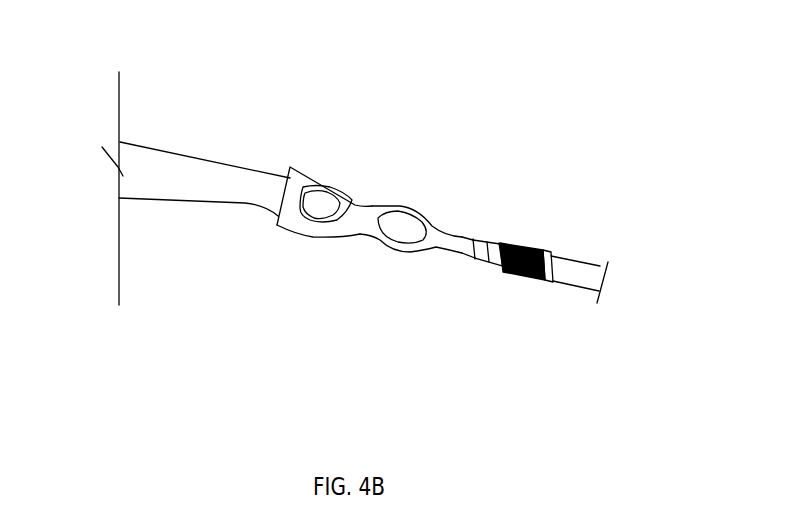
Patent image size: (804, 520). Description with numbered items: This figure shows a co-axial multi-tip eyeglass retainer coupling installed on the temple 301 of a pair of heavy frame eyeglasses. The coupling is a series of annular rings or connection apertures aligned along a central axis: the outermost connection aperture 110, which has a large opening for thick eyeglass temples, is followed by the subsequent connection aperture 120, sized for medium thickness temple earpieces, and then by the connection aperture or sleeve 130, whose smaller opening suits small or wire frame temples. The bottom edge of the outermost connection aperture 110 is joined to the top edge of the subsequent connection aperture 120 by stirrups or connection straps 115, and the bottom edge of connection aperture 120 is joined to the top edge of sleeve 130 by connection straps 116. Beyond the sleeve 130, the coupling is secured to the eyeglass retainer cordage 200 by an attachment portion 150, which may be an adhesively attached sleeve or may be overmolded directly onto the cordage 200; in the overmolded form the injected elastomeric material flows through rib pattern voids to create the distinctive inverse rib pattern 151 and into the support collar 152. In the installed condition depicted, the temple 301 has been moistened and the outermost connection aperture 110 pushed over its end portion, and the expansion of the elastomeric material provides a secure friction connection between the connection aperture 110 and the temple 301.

The temple 301 is at (205, 160).
The outermost connection aperture 110 is at (292, 167).
The connection straps 115 is at (312, 241).
The connection straps 116 is at (393, 256).
The subsequent connection aperture 120 is at (372, 202).
The connection aperture or sleeve 130 is at (462, 232).
The attachment portion 150 is at (504, 276).
The inverse rib pattern 151 is at (524, 244).
The support collar 152 is at (558, 252).
The retainer cordage 200 is at (571, 295).